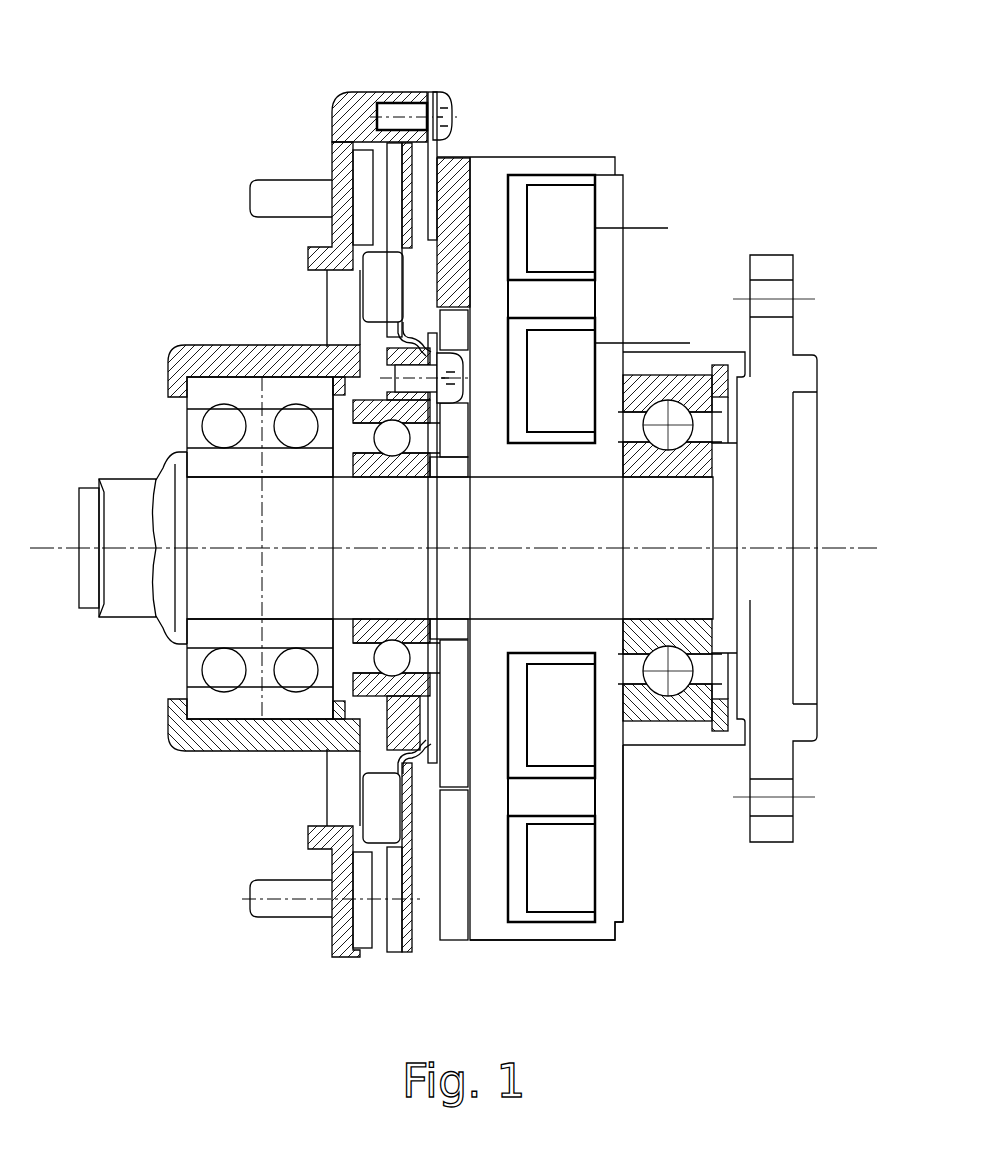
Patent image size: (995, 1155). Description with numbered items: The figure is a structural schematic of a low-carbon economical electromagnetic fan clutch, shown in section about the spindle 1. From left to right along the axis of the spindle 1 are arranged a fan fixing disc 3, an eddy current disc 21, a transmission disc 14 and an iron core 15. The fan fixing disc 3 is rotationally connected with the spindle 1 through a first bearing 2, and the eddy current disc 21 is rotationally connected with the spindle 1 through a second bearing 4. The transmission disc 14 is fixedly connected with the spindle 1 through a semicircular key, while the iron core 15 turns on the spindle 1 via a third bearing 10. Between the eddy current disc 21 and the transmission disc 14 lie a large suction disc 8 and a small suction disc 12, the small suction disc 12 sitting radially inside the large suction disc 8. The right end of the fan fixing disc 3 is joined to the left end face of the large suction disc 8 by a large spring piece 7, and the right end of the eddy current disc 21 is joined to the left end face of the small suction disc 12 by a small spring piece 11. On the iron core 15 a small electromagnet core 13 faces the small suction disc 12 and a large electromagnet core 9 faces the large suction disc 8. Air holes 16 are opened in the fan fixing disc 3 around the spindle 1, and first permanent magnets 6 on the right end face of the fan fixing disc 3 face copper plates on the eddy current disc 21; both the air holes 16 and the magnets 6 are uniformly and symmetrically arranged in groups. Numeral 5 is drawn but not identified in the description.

The spindle 1 is at (90, 487).
The first bearing 2 is at (175, 350).
The fan fixing disc 3 is at (217, 347).
The second bearing 4 is at (328, 347).
The stud 5 is at (268, 178).
The first permanent magnets 6 is at (332, 120).
The large spring piece 7 is at (437, 200).
The large suction disc 8 is at (445, 262).
The large electromagnet core 9 is at (528, 228).
The third bearing 10 is at (668, 375).
The small spring piece 11 is at (441, 765).
The small suction disc 12 is at (440, 743).
The small electromagnet core 13 is at (528, 718).
The transmission disc 14 is at (495, 940).
The iron core 15 is at (623, 893).
The air holes 16 is at (323, 795).
The eddy current disc 21 is at (428, 952).